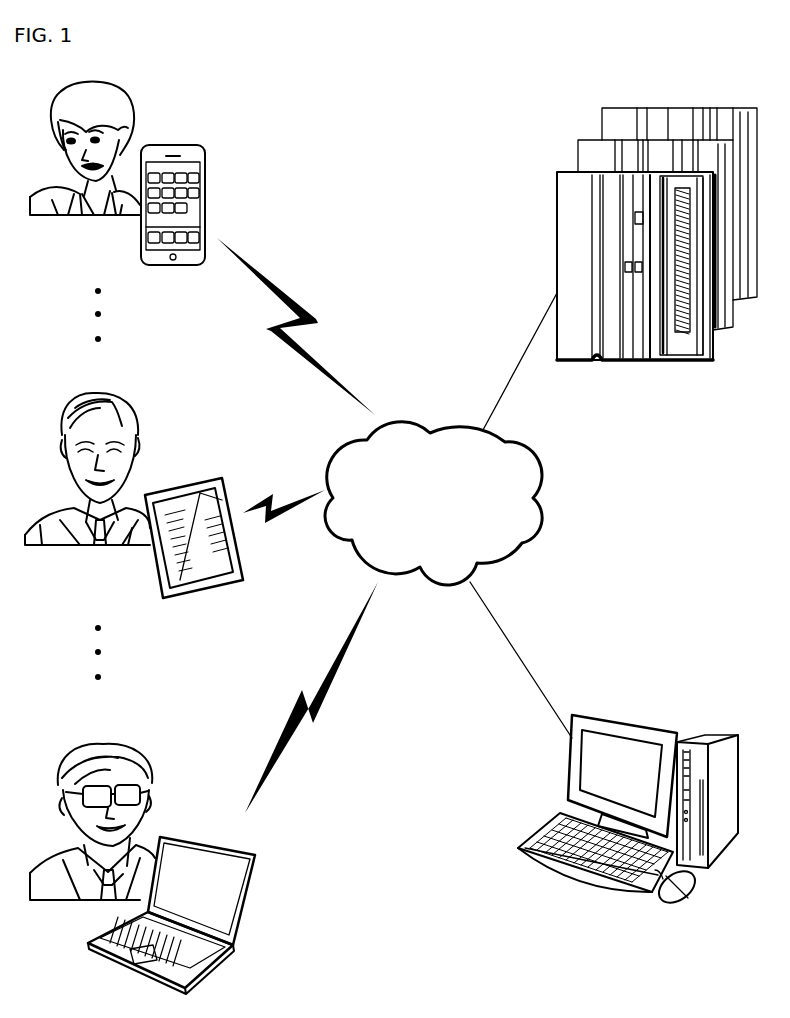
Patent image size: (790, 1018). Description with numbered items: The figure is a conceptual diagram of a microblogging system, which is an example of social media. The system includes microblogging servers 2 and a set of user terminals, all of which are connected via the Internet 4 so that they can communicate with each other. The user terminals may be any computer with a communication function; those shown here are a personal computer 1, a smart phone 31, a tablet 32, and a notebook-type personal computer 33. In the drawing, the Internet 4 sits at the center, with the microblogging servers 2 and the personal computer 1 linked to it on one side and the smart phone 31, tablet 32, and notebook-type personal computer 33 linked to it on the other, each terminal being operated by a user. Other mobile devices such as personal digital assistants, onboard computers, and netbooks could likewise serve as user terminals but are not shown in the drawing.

The personal computer 1 is at (712, 742).
The microblogging servers 2 is at (557, 208).
The Internet 4 is at (436, 511).
The smart phone 31 is at (210, 172).
The tablet 32 is at (199, 482).
The notebook-type personal computer 33 is at (247, 880).